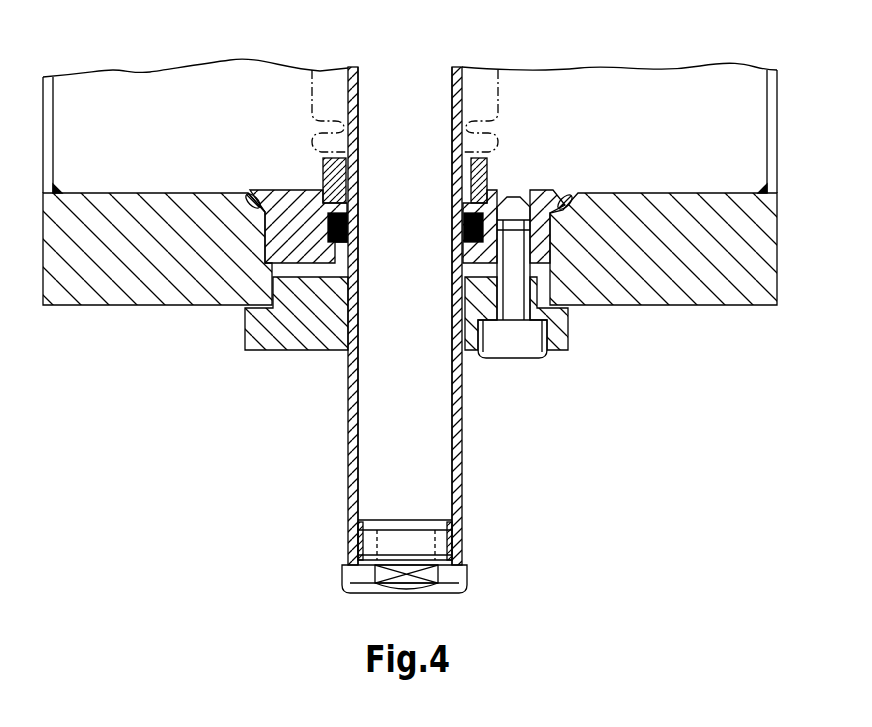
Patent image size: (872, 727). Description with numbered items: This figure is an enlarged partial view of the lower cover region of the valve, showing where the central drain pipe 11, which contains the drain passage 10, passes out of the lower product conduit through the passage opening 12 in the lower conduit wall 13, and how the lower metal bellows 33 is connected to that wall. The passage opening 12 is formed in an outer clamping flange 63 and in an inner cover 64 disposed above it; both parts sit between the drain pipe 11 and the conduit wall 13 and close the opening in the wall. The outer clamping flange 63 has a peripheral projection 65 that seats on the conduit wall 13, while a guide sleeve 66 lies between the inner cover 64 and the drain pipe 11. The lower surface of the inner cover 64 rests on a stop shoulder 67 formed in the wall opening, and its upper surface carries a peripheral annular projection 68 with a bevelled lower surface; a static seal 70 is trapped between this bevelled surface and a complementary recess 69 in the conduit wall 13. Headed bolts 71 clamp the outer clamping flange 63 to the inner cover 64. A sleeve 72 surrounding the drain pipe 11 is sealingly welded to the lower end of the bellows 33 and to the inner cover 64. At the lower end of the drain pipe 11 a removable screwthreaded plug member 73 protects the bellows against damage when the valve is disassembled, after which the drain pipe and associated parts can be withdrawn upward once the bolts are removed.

The drain passage 10 is at (445, 490).
The drain pipe 11 is at (463, 455).
The passage opening 12 is at (561, 276).
The lower conduit wall 13 is at (764, 262).
The lower metal bellows 33 is at (498, 88).
The outer clamping flange 63 is at (237, 267).
The inner cover 64 is at (288, 188).
The peripheral projection 65 is at (260, 331).
The guide sleeve 66 is at (325, 221).
The stop shoulder 67 is at (557, 252).
The peripheral annular projection 68 is at (253, 190).
The complementary recess 69 is at (238, 201).
The static seal 70 is at (568, 202).
The headed bolts 71 is at (533, 337).
The sleeve 72 is at (487, 176).
The screwthreaded plug member 73 is at (455, 578).